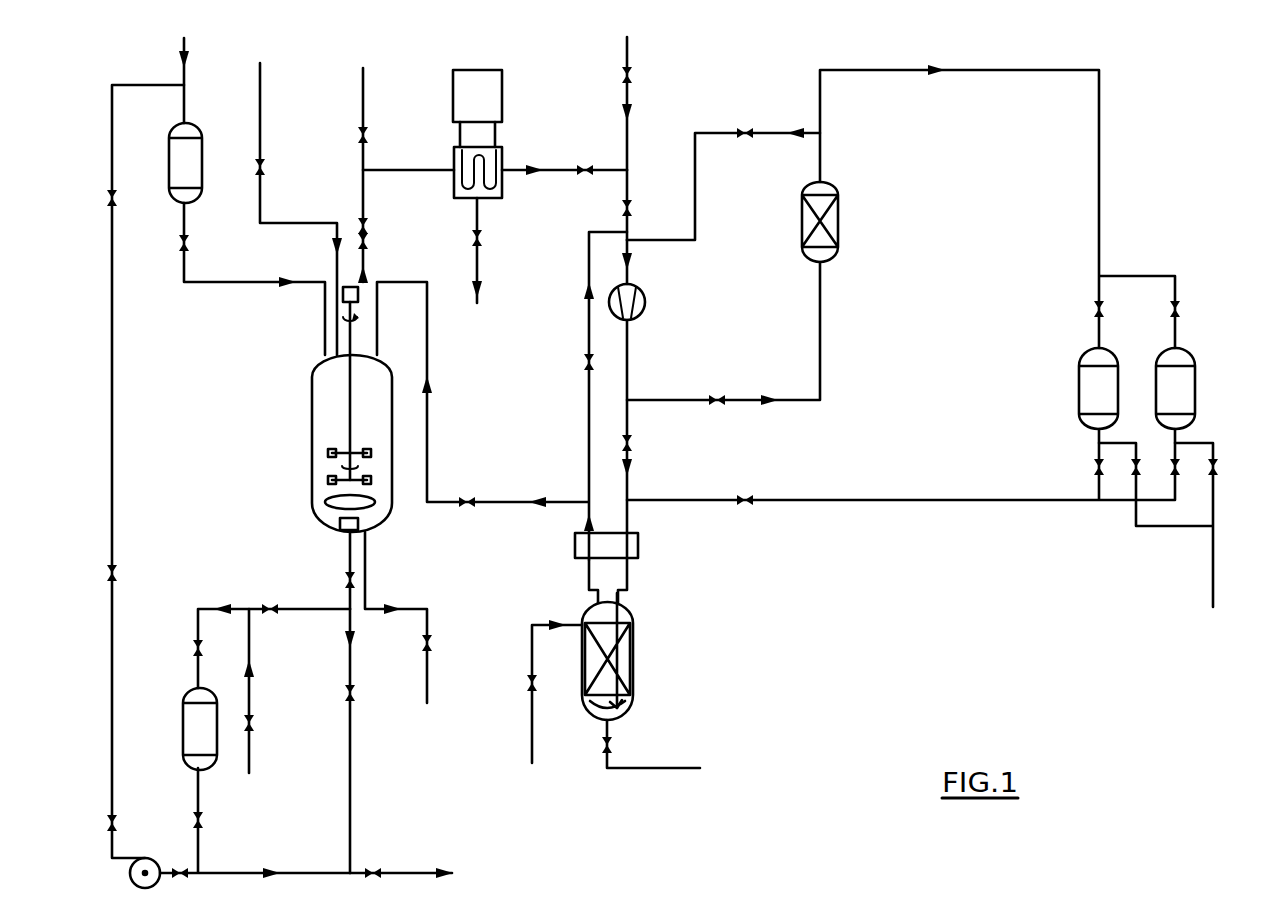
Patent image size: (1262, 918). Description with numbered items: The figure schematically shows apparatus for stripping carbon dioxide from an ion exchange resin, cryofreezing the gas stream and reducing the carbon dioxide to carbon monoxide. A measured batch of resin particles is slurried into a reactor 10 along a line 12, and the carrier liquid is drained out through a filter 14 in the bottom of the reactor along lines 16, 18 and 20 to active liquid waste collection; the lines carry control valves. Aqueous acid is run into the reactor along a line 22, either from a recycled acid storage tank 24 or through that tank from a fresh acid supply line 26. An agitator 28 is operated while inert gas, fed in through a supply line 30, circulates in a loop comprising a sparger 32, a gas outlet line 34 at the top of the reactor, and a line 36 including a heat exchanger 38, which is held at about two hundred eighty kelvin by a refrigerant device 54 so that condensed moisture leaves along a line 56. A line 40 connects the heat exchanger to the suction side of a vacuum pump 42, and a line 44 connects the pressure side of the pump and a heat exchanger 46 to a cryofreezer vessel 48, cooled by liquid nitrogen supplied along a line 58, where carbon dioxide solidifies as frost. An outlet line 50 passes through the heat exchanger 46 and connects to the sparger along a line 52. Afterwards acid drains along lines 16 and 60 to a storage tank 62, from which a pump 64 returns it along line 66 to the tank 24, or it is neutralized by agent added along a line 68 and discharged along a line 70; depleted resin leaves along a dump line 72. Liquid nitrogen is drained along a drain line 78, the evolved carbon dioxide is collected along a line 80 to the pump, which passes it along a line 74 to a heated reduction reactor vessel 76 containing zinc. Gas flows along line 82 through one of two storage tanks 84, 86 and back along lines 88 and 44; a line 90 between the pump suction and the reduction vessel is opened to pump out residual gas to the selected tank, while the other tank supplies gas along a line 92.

The reactor 10 is at (312, 397).
The line 12 is at (306, 222).
The filter 14 is at (340, 528).
The line 16 is at (348, 562).
The line 18 is at (352, 742).
The line 20 is at (390, 873).
The line 22 is at (228, 282).
The recycled acid storage tank 24 is at (202, 150).
The fresh acid supply line 26 is at (186, 44).
The agitator 28 is at (345, 422).
The supply line 30 is at (630, 98).
The sparger 32 is at (370, 508).
The gas outlet line 34 is at (372, 244).
The line 36 is at (405, 170).
The heat exchanger 38 is at (502, 157).
The line 40 is at (625, 184).
The vacuum pump 42 is at (645, 300).
The line 44 is at (630, 350).
The heat exchanger 46 is at (638, 547).
The cryofreezer vessel 48 is at (633, 660).
The outlet line 50 is at (585, 568).
The line 52 is at (500, 502).
The refrigerant device 54 is at (502, 92).
The line 56 is at (480, 275).
The line 58 is at (530, 648).
The line 60 is at (200, 609).
The storage tank 62 is at (183, 720).
The pump 64 is at (155, 860).
The line 66 is at (114, 466).
The line 68 is at (251, 700).
The line 70 is at (255, 873).
The dump line 72 is at (427, 609).
The line 74 is at (822, 350).
The reduction reactor vessel 76 is at (838, 212).
The drain line 78 is at (660, 768).
The line 80 is at (589, 443).
The line 82 is at (1005, 72).
The storage tank 84 is at (1079, 366).
The storage tank 86 is at (1156, 372).
The line 88 is at (1055, 500).
The line 90 is at (716, 133).
The line 92 is at (1213, 565).